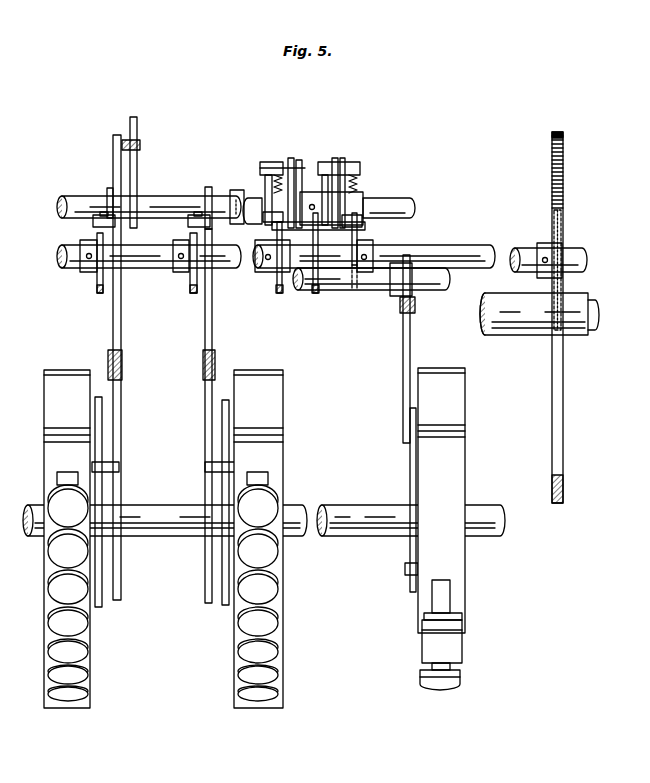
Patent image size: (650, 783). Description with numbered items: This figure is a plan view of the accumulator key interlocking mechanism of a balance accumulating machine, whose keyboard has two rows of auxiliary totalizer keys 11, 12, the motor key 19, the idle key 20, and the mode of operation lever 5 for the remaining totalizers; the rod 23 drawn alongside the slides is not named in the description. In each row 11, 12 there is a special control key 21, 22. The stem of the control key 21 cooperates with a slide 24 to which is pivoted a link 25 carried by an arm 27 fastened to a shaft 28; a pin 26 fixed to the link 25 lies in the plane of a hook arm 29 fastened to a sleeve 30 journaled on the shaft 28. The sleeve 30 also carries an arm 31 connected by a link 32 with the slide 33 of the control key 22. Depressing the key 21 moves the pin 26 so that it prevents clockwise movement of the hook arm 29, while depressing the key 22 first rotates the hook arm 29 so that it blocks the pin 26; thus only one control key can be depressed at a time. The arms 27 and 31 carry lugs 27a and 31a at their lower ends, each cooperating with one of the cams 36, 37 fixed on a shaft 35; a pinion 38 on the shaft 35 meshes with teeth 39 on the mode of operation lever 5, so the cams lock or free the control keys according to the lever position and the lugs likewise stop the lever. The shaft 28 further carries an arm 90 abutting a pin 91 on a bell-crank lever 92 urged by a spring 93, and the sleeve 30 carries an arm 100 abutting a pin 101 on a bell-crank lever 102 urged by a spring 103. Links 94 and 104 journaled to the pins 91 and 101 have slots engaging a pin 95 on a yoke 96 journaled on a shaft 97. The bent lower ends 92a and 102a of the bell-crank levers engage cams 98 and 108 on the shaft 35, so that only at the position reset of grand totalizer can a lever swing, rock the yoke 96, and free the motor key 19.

The mode of operation lever 5 is at (552, 433).
The row of auxiliary totalizer keys 11 is at (64, 549).
The row of auxiliary totalizer keys 12 is at (272, 549).
The motor key 19 is at (462, 660).
The idle key 20 is at (462, 693).
The control key 21 is at (55, 500).
The control key 22 is at (272, 500).
The guide rod 23 is at (102, 573).
The slide 24 is at (117, 445).
The link 25 is at (121, 308).
The pin 26 is at (141, 148).
The arm 27 is at (108, 190).
The lug 27a is at (95, 222).
The shaft 28 is at (78, 198).
The hook arm 29 is at (137, 125).
The sleeve 30 is at (166, 198).
The arm 31 is at (208, 188).
The lug 31a is at (190, 222).
The link 32 is at (205, 318).
The slide 33 is at (205, 424).
The shaft 35 is at (70, 262).
The cam 36 is at (97, 290).
The cam 37 is at (190, 285).
The pinion 38 is at (552, 228).
The teeth 39 is at (552, 166).
The arm 90 is at (330, 162).
The pin 91 is at (324, 162).
The bell-crank lever 92 is at (345, 160).
The outwardly bent lower end 92a is at (360, 222).
The spring 93 is at (357, 185).
The link 94 is at (336, 160).
The pin 95 is at (292, 232).
The yoke 96 is at (316, 294).
The shaft 97 is at (433, 285).
The cam 98 is at (355, 292).
The arm 100 is at (262, 163).
The pin 101 is at (265, 178).
The bell-crank lever 102 is at (289, 160).
The outwardly bent lower end 102a is at (264, 222).
The spring 103 is at (274, 184).
The link 104 is at (299, 160).
The cam 108 is at (278, 294).